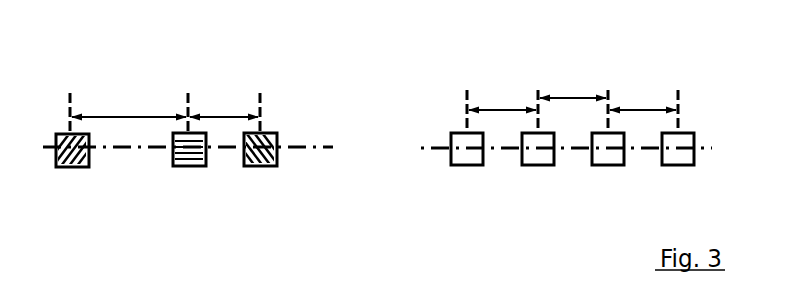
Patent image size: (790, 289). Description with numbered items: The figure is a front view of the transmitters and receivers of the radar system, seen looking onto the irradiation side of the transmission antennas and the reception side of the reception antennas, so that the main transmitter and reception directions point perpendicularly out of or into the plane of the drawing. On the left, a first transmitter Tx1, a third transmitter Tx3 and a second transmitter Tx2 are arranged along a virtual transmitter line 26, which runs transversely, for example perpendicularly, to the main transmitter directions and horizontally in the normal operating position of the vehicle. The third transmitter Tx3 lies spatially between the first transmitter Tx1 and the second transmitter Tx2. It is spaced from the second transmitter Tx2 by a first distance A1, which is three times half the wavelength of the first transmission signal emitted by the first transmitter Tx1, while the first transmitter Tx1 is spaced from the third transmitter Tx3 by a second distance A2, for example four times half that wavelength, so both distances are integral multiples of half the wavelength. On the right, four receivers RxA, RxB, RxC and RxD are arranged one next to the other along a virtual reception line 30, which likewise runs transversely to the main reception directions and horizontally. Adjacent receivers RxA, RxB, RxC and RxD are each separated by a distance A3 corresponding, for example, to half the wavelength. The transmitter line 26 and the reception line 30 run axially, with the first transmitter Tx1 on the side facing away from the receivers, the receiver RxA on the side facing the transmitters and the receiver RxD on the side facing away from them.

The transmitter line 26 is at (325, 147).
The reception line 30 is at (428, 147).
The first transmitter Tx1 is at (69, 167).
The second transmitter Tx2 is at (255, 167).
The third transmitter Tx3 is at (188, 167).
The first distance A1 is at (232, 112).
The second distance A2 is at (135, 112).
The distance between adjacent receivers A3 is at (502, 108).
The receiver RxA is at (461, 166).
The receiver RxB is at (526, 166).
The receiver RxC is at (610, 166).
The receiver RxD is at (682, 166).